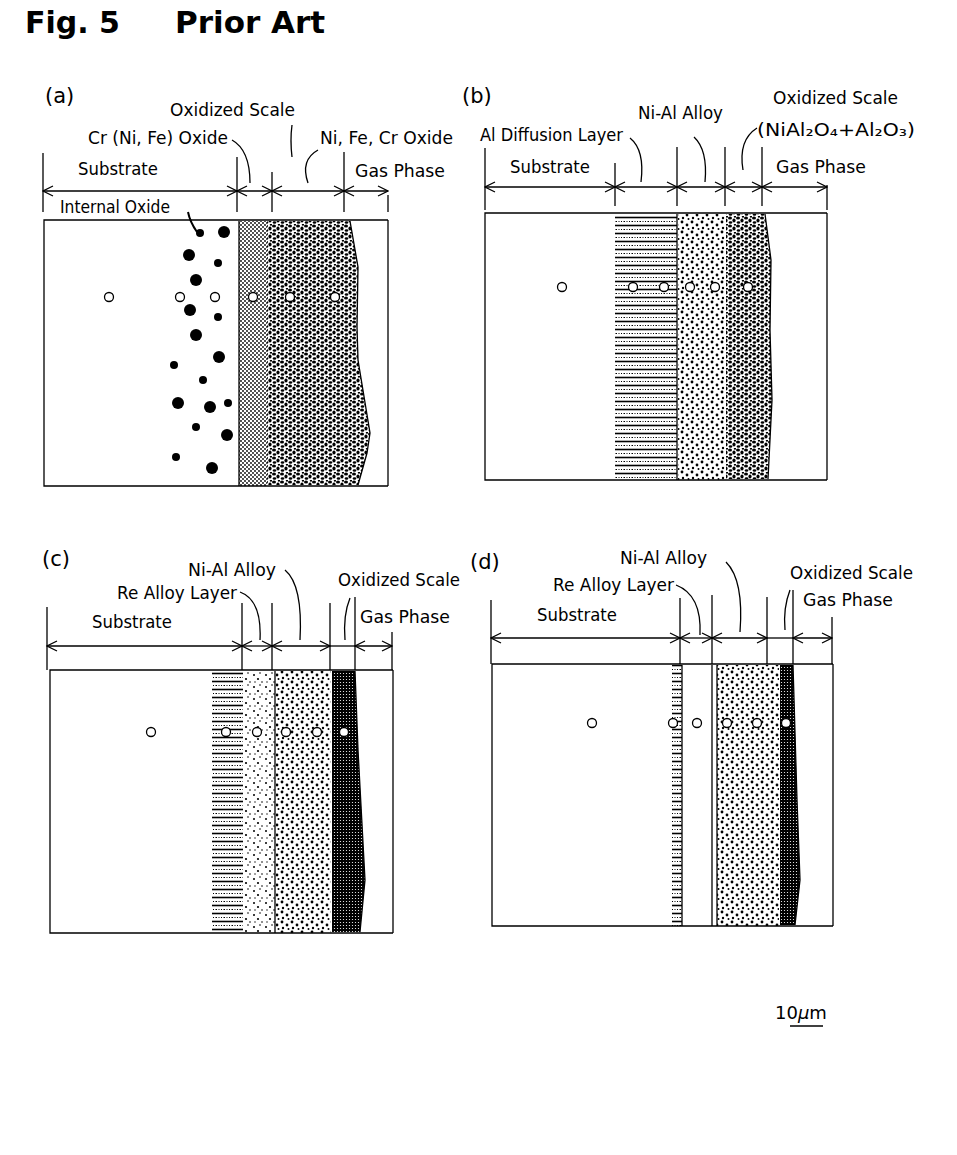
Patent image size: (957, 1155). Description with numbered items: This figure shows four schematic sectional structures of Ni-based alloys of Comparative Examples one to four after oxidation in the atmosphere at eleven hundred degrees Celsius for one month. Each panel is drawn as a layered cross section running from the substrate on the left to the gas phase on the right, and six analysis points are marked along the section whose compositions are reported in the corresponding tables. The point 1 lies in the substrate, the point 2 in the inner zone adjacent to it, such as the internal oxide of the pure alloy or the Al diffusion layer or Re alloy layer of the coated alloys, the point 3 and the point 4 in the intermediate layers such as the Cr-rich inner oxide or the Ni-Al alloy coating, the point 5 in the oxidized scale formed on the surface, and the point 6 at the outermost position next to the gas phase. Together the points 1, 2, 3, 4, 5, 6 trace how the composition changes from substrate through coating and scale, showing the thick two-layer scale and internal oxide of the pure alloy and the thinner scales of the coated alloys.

The analysis point 1 is at (438, 592).
The analysis point 2 is at (425, 592).
The analysis point 3 is at (459, 593).
The analysis point 4 is at (513, 593).
The analysis point 5 is at (544, 593).
The analysis point 6 is at (581, 592).